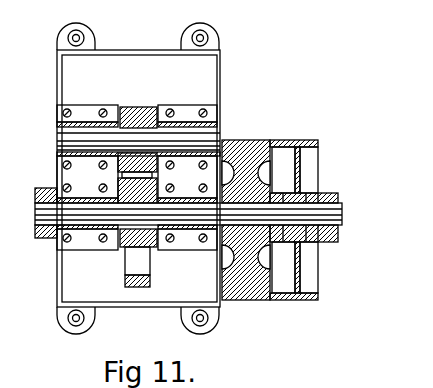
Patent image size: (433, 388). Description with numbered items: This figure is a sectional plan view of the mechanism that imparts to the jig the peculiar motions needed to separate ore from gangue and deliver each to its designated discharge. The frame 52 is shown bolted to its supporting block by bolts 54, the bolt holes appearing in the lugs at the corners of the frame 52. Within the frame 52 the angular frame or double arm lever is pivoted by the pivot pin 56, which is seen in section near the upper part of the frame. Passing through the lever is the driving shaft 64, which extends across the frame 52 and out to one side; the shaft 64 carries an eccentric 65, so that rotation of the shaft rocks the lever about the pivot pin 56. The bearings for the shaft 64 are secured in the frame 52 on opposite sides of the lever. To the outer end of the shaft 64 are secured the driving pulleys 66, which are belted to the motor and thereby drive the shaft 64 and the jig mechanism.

The frame 52 is at (125, 60).
The bolts 54 is at (211, 38).
The pivot pin 56 is at (150, 116).
The driving shaft 64 is at (342, 217).
The eccentric 65 is at (120, 236).
The driving pulleys 66 is at (245, 300).